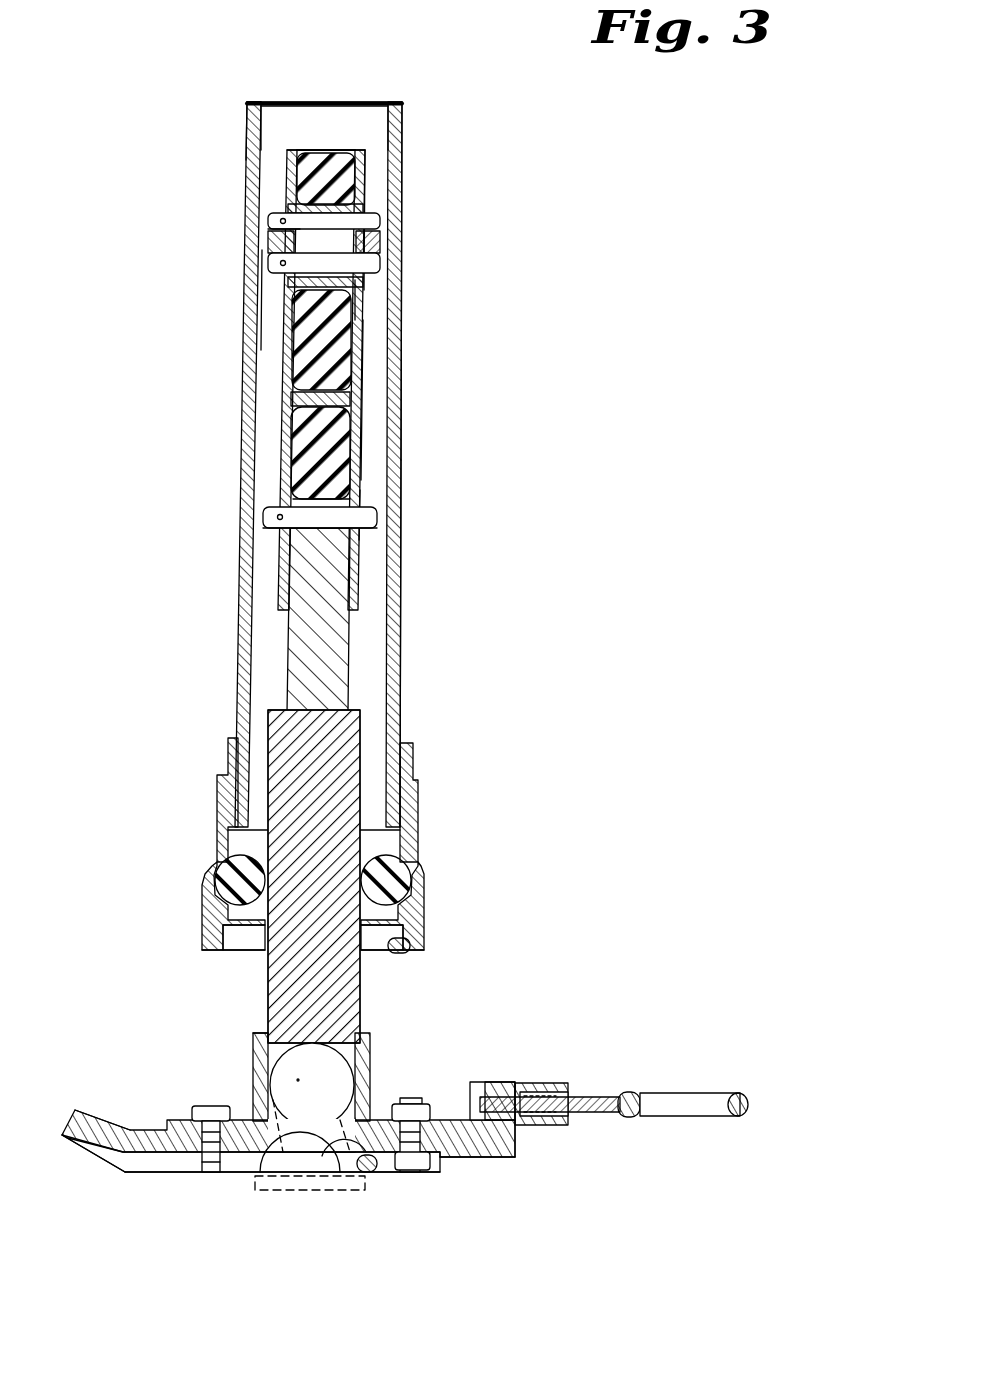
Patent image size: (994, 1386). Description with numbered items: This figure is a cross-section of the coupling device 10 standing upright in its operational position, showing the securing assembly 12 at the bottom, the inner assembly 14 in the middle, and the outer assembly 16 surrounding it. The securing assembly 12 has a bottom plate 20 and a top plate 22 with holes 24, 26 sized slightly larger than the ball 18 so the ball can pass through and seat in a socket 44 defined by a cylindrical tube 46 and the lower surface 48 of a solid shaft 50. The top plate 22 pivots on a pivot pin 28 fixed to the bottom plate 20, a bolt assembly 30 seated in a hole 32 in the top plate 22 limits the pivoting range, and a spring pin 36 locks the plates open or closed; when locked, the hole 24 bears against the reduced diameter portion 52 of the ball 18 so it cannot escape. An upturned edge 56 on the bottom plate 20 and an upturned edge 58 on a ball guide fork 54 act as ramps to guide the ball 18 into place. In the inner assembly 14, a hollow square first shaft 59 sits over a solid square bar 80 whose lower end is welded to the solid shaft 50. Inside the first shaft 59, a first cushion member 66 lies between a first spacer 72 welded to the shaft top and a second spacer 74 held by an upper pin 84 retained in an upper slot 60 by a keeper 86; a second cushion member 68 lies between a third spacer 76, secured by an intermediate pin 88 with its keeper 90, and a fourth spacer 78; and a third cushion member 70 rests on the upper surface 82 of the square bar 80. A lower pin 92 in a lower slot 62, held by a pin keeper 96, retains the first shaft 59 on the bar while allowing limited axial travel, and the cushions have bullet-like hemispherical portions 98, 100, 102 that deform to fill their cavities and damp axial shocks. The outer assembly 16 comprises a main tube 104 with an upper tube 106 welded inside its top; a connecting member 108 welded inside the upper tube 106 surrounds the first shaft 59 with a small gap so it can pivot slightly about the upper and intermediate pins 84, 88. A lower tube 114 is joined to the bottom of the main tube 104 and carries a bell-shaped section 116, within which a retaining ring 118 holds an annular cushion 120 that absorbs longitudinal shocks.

The coupling device 10 is at (508, 176).
The securing assembly 12 is at (445, 1036).
The inner assembly 14 is at (372, 972).
The outer assembly 16 is at (412, 146).
The ball 18 is at (355, 1032).
The bottom plate 20 is at (515, 1157).
The top plate 22 is at (195, 1121).
The hole 24 is at (282, 1162).
The hole 26 is at (315, 1162).
The pivot pin 28 is at (208, 1106).
The bolt assembly 30 is at (418, 1098).
The hole 32 is at (455, 1158).
The spring pin 36 is at (672, 1098).
The socket 44 is at (345, 1174).
The cylindrical tube 46 is at (253, 1090).
The lower surface 48 is at (253, 1052).
The solid shaft 50 is at (300, 975).
The reduced diameter portion 52 is at (375, 1172).
The ball guide fork 54 is at (155, 1168).
The upturned edge 56 is at (100, 1118).
The upturned edge 58 is at (85, 1142).
The first shaft 59 is at (242, 122).
The upper slot 60 is at (403, 192).
The lower slot 62 is at (357, 478).
The first cushion member 66 is at (296, 175).
The second cushion member 68 is at (295, 350).
The third cushion member 70 is at (295, 435).
The first spacer 72 is at (354, 122).
The second spacer 74 is at (380, 216).
The third spacer 76 is at (362, 283).
The fourth spacer 78 is at (362, 390).
The solid square bar 80 is at (320, 632).
The upper surface 82 is at (370, 505).
The upper pin 84 is at (283, 220).
The keeper 86 is at (270, 232).
The intermediate pin 88 is at (265, 300).
The keeper 90 is at (275, 262).
The lower pin 92 is at (290, 540).
The pin keeper 96 is at (265, 515).
The hemispherical portion 98 is at (304, 122).
The hemispherical portion 100 is at (365, 305).
The hemispherical portion 102 is at (298, 497).
The main tube 104 is at (400, 565).
The upper tube 106 is at (287, 100).
The connecting member 108 is at (380, 243).
The lower tube 114 is at (410, 742).
The bell-shaped section 116 is at (416, 836).
The retaining ring 118 is at (400, 957).
The annular cushion 120 is at (232, 836).